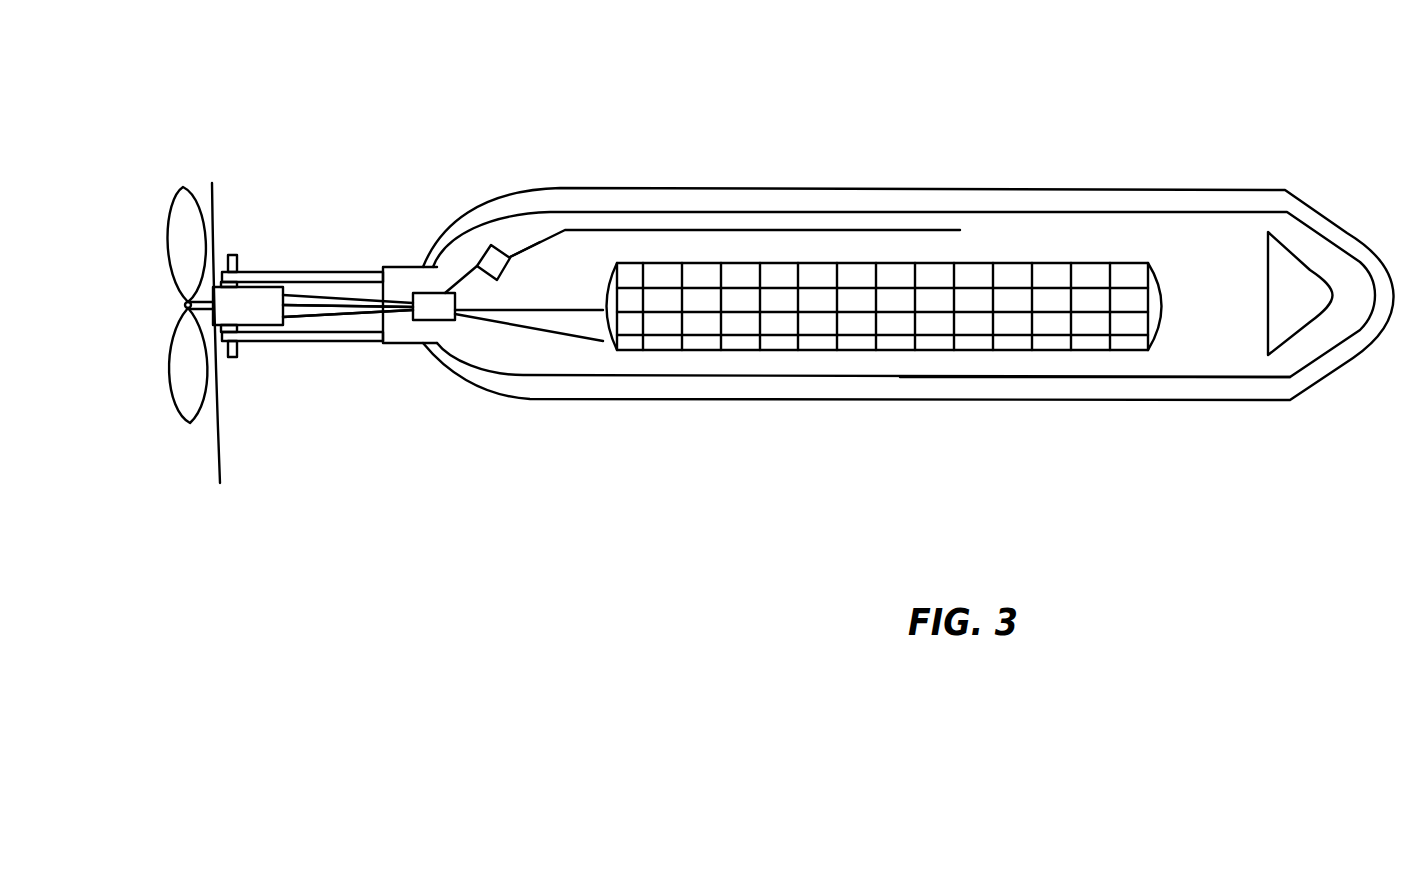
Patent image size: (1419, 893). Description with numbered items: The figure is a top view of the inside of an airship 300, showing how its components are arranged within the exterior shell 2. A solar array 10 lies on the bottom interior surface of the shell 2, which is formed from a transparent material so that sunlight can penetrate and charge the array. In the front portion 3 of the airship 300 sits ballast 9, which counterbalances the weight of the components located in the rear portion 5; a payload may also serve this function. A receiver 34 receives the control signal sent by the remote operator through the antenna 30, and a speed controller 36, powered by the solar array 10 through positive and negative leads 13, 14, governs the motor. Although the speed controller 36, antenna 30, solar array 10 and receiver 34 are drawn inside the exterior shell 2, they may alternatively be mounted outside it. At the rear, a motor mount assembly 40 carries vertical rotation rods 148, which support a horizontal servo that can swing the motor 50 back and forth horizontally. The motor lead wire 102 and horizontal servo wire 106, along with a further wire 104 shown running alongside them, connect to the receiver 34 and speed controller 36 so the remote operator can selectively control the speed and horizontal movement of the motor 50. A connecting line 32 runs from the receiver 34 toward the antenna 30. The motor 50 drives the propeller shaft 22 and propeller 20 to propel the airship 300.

The airship 300 is at (1230, 98).
The front portion 3 is at (1338, 188).
The exterior shell 2 is at (1285, 363).
The ballast 9 is at (1305, 278).
The solar array 10 is at (1027, 297).
The antenna 30 is at (742, 230).
The connecting cable 32 is at (531, 243).
The receiver 34 is at (478, 260).
The speed controller 36 is at (455, 320).
The positive lead 13 is at (538, 313).
The negative lead 14 is at (605, 341).
The motor mount assembly 40 is at (388, 343).
The rear portion 5 is at (505, 85).
The vertical rotation rods 148 is at (238, 263).
The motor 50 is at (213, 287).
The motor lead wire 102 is at (325, 297).
The motor lead wire 104 is at (348, 306).
The horizontal servo wire 106 is at (348, 313).
The propeller shaft 22 is at (216, 356).
The propeller 20 is at (163, 238).